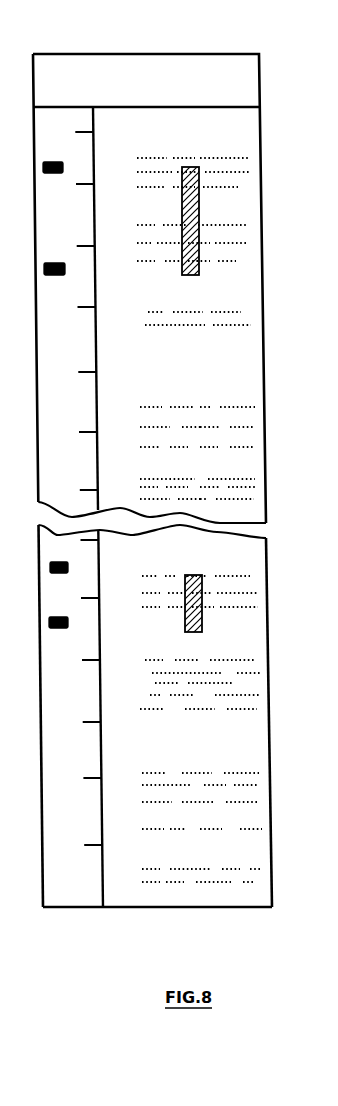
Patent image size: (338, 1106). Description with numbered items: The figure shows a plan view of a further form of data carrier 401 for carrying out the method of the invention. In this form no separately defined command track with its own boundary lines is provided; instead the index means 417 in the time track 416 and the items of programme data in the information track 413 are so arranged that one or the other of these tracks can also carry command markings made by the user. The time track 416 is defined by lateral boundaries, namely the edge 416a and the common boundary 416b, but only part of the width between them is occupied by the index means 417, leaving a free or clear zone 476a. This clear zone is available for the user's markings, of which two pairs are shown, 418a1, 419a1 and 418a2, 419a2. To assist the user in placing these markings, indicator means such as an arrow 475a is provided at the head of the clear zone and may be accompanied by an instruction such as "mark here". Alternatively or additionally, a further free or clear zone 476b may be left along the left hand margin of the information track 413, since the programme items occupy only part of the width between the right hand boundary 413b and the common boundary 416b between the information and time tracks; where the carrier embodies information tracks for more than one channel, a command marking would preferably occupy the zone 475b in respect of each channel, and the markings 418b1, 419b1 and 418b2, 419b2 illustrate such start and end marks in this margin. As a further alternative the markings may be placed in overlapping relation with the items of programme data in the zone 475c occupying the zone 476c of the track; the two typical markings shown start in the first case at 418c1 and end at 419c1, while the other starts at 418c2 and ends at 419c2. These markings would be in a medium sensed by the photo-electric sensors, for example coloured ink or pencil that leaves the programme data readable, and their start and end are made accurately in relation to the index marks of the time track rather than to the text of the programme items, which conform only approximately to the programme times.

The data carrier 401 is at (187, 52).
The arrow 475a is at (49, 100).
The zone 475b is at (119, 100).
The zone 475c is at (195, 100).
The marking 418a1 is at (51, 173).
The marking 418b1 is at (122, 170).
The marking start 418c1 is at (192, 167).
The marking 419a1 is at (49, 278).
The marking 419b1 is at (115, 274).
The marking end 419c1 is at (190, 275).
The free or clear zone 476a is at (87, 406).
The free or clear zone 476b is at (145, 381).
The zone 476c is at (207, 382).
The marking 418a2 is at (67, 573).
The marking 418b2 is at (115, 560).
The marking start 418c2 is at (195, 575).
The marking 419a2 is at (50, 630).
The marking 419b2 is at (115, 625).
The marking end 419c2 is at (197, 632).
The index means 417 is at (85, 722).
The time track 416 is at (88, 902).
The edge 416a is at (43, 877).
The common boundary 416b is at (105, 893).
The information track 413 is at (202, 893).
The right hand boundary 413b is at (273, 891).